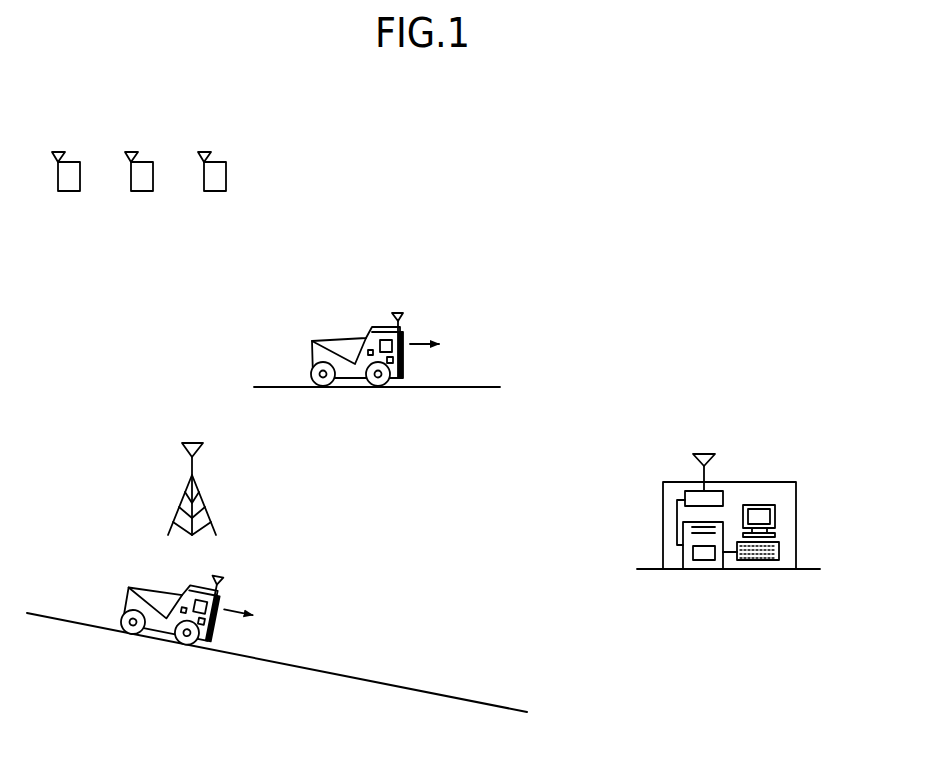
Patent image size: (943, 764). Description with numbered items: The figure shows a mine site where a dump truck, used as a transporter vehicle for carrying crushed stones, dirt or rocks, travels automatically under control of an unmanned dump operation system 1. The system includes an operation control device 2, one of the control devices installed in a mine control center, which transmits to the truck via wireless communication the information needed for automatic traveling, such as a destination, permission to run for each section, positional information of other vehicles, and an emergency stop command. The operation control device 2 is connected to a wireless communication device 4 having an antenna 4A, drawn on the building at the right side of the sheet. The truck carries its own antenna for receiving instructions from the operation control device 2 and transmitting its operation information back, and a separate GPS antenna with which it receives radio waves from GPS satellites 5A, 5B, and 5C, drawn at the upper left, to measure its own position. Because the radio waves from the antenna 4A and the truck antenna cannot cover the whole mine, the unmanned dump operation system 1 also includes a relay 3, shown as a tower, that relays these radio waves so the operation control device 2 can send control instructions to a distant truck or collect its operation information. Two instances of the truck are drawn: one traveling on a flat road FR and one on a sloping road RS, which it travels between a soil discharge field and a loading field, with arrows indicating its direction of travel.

The unmanned dump operation system 1 is at (684, 154).
The operation control device 2 is at (734, 502).
The relay 3 is at (160, 478).
The wireless communication device 4 is at (685, 496).
The antenna 4A is at (706, 452).
The GPS satellite 5A is at (70, 191).
The GPS satellite 5B is at (143, 191).
The GPS satellite 5C is at (216, 191).
The flat road FR is at (482, 383).
The sloping road RS is at (438, 693).